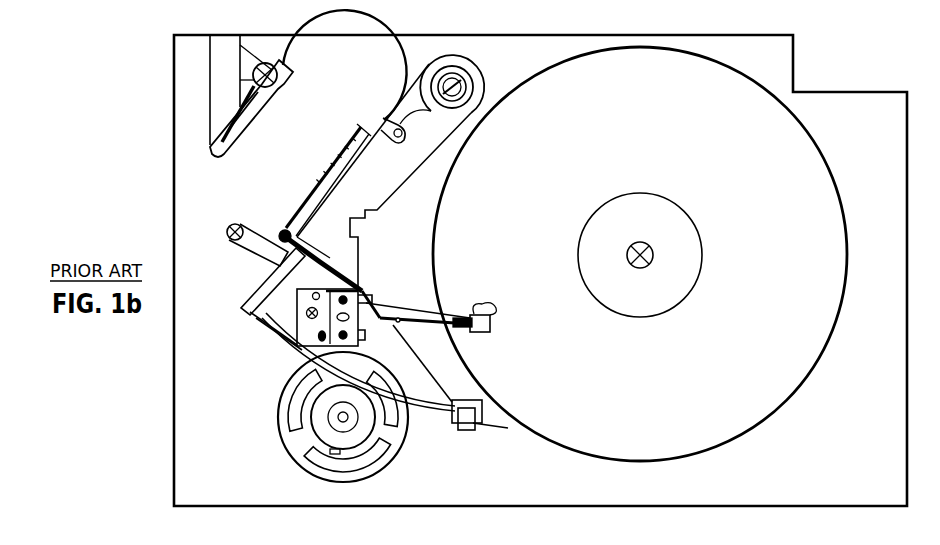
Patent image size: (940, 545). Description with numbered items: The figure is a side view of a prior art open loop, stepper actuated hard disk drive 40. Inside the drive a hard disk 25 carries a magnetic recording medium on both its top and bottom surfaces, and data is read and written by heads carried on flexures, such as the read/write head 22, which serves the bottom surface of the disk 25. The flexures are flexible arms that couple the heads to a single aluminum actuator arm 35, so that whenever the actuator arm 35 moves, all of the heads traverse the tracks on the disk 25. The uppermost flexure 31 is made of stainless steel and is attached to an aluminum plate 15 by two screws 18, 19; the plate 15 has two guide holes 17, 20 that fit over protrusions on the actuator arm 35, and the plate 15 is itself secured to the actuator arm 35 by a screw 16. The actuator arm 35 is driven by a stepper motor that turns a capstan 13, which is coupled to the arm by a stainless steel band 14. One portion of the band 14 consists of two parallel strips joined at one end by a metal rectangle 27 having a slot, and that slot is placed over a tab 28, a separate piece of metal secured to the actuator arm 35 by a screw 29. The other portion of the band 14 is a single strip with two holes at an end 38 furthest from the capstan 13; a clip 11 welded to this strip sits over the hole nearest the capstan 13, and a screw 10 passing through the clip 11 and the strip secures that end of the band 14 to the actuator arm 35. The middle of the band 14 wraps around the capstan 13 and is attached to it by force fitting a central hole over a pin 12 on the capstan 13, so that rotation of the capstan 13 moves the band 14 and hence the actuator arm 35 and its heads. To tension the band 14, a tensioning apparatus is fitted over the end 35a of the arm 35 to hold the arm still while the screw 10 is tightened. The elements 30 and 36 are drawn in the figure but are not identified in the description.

The hard disk drive 40 is at (845, 40).
The first hard disk 25 is at (592, 443).
The actuator arm 35 is at (389, 188).
The end of actuator arm 35a is at (432, 73).
The pin / stop on lever arm 36 is at (396, 140).
The screw 29 is at (279, 246).
The pivot lever 30 is at (238, 246).
The guide hole 20 is at (268, 286).
The tab 28 is at (247, 307).
The metal rectangle 27 is at (252, 310).
The aluminum plate 15 is at (302, 322).
The screw 16 is at (305, 313).
The screw 18 is at (354, 348).
The screw 19 is at (352, 298).
The uppermost flexure 31 is at (402, 316).
The read/write head 22 is at (480, 330).
The guide hole 17 is at (307, 348).
The end of band strip 38 is at (497, 430).
The clip 11 is at (463, 403).
The screw 10 is at (462, 432).
The pin 12 is at (333, 450).
The capstan 13 is at (323, 410).
The band 14 is at (310, 428).